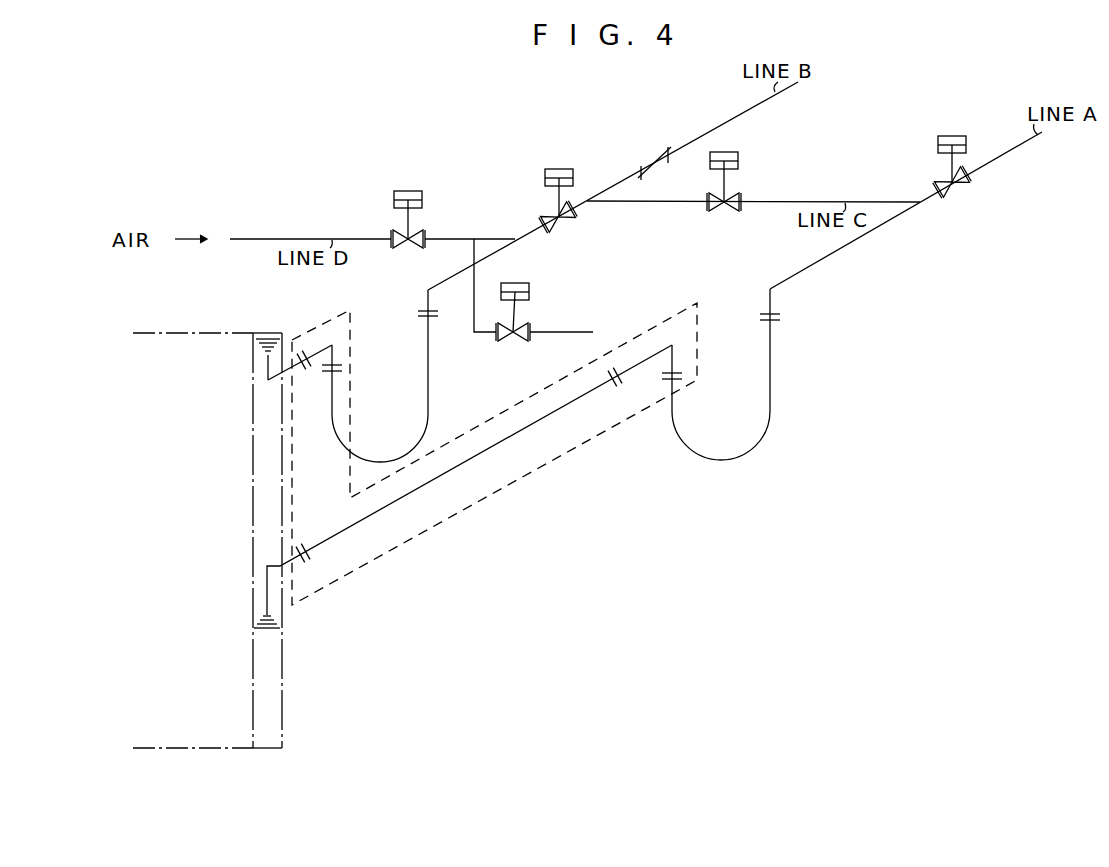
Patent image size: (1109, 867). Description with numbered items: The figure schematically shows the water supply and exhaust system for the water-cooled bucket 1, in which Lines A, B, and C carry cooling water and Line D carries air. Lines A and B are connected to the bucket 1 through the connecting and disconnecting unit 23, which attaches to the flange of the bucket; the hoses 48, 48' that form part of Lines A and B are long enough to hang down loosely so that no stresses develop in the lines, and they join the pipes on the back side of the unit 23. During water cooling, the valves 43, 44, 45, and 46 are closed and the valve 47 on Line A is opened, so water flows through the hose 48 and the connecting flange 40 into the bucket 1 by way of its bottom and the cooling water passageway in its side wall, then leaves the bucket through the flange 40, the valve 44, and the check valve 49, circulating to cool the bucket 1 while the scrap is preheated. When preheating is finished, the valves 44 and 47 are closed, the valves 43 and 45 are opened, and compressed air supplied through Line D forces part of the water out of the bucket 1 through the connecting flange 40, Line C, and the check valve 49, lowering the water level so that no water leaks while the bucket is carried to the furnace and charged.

The bucket 1 is at (200, 516).
The connecting and disconnecting unit 23 is at (482, 498).
The connecting flange 40 is at (304, 352).
The valve 43 is at (408, 208).
The valve 44 is at (558, 190).
The valve 45 is at (738, 160).
The valve 46 is at (543, 280).
The valve 47 is at (952, 135).
The hose 48 is at (735, 374).
The hose 48' is at (402, 376).
The check valve 49 is at (650, 166).